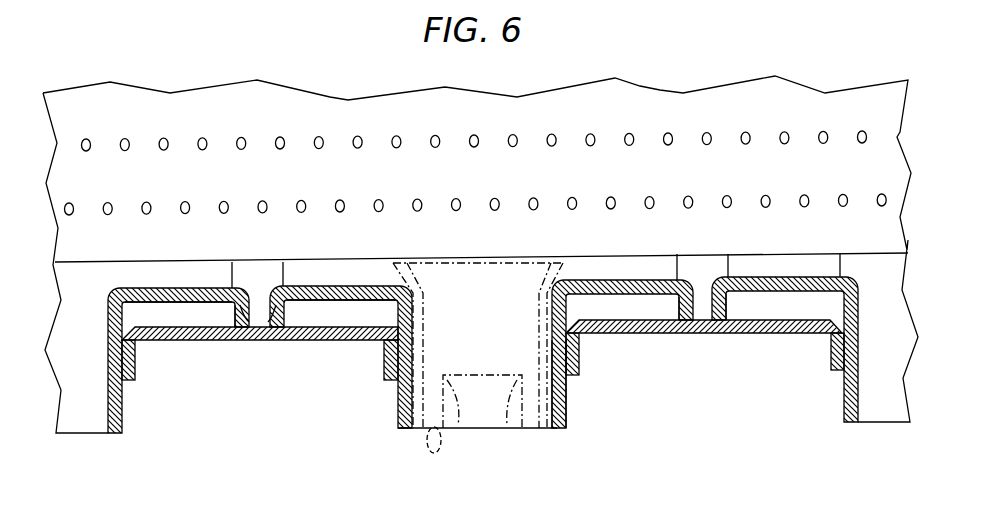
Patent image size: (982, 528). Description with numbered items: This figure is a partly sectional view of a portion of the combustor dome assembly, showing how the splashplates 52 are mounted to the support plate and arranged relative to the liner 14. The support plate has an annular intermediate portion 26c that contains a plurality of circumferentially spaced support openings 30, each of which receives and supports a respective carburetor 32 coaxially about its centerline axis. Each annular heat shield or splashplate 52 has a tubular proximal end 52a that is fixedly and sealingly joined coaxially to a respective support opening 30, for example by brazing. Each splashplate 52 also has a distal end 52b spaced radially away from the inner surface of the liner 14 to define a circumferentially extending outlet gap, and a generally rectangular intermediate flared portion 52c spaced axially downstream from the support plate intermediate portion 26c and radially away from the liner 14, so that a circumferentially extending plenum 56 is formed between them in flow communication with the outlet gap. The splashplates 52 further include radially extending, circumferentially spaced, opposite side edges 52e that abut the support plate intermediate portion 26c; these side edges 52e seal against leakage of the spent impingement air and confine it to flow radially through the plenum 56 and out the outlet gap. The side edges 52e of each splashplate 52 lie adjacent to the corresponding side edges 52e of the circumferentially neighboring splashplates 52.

The liner 14 is at (645, 74).
The annular intermediate portion 26c is at (206, 338).
The support opening 30 is at (393, 380).
The carburetor 32 is at (478, 373).
The splashplate 52 is at (126, 405).
The proximal end 52a is at (108, 388).
The distal end 52b is at (737, 254).
The intermediate flared portion 52c is at (173, 303).
The side edge 52e is at (212, 342).
The plenum 56 is at (322, 307).